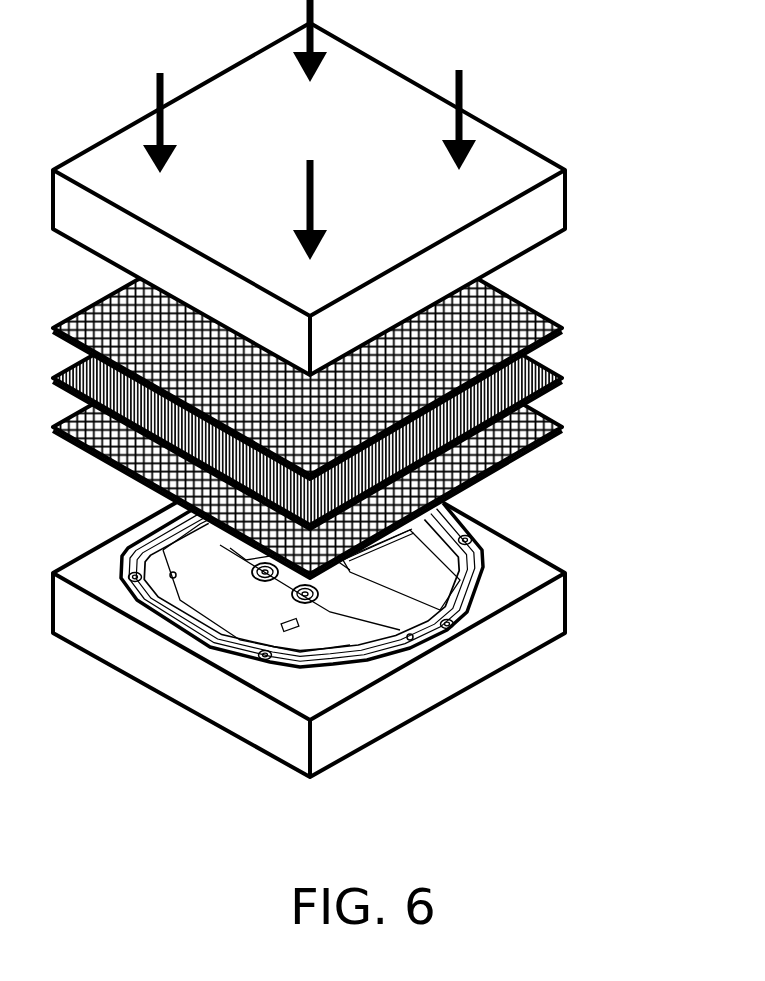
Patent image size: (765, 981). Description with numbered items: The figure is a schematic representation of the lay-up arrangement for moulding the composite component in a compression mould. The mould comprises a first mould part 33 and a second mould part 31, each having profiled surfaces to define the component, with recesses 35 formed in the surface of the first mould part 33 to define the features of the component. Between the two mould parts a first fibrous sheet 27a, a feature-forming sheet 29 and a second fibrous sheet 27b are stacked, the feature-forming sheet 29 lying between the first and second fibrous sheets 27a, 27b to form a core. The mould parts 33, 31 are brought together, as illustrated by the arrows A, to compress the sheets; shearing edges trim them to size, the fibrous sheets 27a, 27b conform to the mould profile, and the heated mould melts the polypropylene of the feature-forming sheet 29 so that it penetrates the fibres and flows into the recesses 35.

The arrows A is at (461, 87).
The second mould part 31 is at (530, 217).
The first fibrous sheet 27a is at (502, 320).
The feature-forming sheet 29 is at (502, 383).
The second fibrous sheet 27b is at (502, 437).
The recesses 35 is at (420, 580).
The first mould part 33 is at (530, 620).